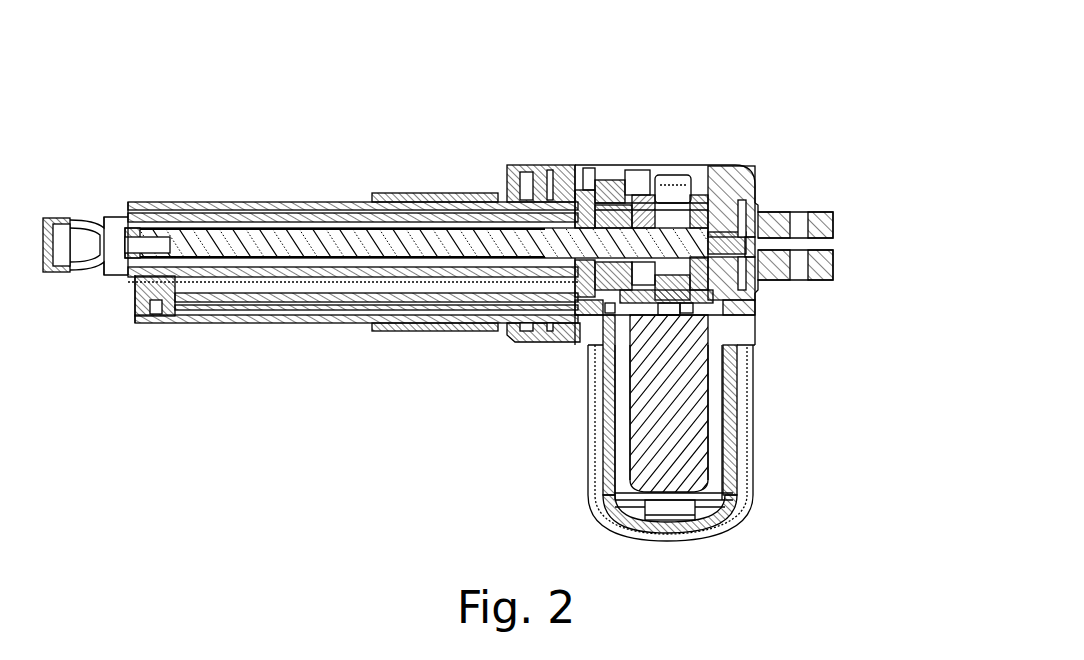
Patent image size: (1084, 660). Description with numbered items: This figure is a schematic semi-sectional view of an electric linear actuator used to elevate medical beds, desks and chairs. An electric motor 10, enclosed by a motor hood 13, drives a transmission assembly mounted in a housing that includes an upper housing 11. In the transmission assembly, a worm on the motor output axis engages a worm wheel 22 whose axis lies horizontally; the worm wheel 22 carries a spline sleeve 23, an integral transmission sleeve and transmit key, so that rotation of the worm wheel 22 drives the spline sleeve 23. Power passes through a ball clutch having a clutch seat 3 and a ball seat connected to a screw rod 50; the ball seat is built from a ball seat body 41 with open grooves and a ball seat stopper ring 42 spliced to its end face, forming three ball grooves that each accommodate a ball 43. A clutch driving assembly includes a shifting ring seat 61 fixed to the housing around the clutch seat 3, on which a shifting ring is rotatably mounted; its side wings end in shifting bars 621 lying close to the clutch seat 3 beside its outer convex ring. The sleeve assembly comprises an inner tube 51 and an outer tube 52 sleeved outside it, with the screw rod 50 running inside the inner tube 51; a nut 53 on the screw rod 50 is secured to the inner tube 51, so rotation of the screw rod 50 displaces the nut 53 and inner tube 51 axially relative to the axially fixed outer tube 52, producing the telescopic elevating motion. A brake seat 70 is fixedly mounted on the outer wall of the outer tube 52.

The clutch seat 3 is at (700, 170).
The electric motor 10 is at (662, 428).
The upper housing 11 is at (505, 170).
The motor hood 13 is at (755, 402).
The worm wheel 22 is at (752, 307).
The spline sleeve 23 is at (752, 190).
The ball seat body 41 is at (621, 196).
The ball seat stopper ring 42 is at (590, 200).
The ball 43 is at (740, 345).
The screw rod 50 is at (190, 220).
The inner tube 51 is at (270, 220).
The outer tube 52 is at (310, 202).
The nut 53 is at (482, 262).
The shifting ring seat 61 is at (587, 345).
The brake seat 70 is at (413, 196).
The shifting bar 621 is at (620, 185).